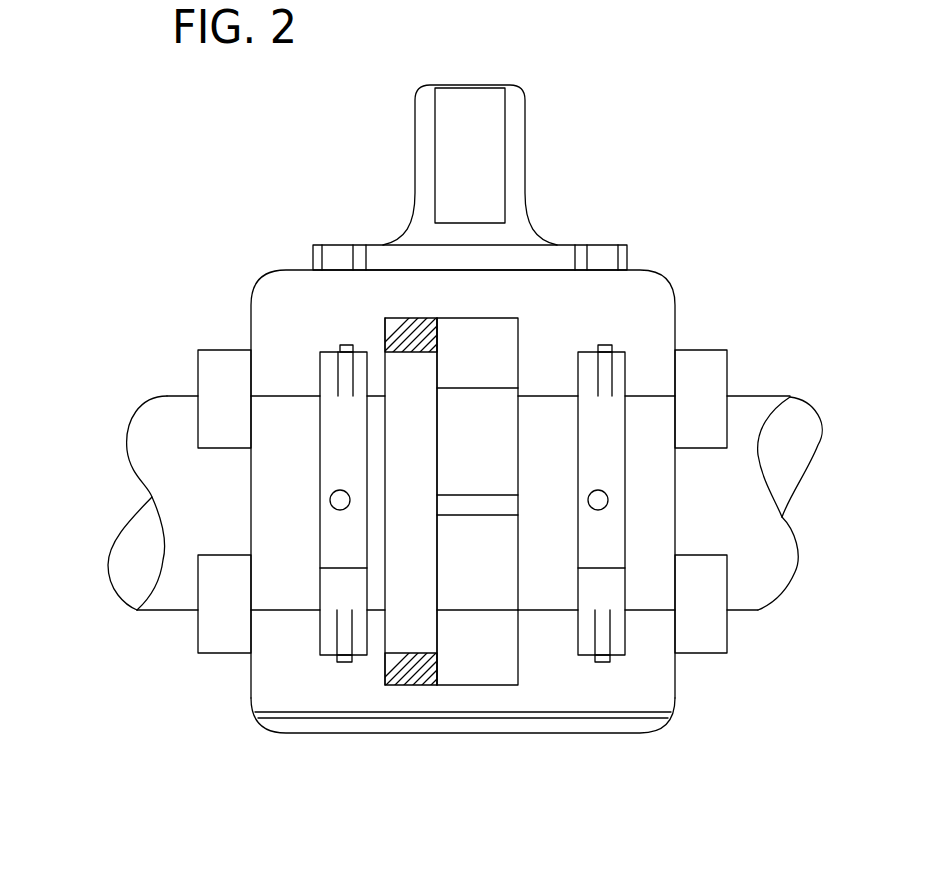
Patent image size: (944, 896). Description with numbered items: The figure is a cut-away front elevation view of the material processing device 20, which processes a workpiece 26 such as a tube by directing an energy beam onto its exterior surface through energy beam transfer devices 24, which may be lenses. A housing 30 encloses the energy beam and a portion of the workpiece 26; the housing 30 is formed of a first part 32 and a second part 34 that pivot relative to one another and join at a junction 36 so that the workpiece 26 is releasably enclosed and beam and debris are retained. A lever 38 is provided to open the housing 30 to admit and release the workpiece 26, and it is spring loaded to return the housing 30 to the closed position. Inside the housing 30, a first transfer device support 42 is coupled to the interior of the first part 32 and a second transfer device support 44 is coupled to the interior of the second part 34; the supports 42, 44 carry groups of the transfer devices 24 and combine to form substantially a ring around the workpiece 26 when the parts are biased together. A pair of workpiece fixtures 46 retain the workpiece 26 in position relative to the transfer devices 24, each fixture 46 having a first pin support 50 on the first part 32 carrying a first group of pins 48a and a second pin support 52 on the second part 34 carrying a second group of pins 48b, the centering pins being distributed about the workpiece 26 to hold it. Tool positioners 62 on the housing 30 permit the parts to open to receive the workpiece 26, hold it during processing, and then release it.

The material processing device 20 is at (639, 154).
The energy beam transfer device 24 is at (498, 307).
The workpiece 26 is at (753, 407).
The housing 30 is at (662, 282).
The first part 32 is at (658, 693).
The second part 34 is at (627, 727).
The junction 36 is at (633, 717).
The lever 38 is at (488, 128).
The first transfer device support 42 is at (393, 318).
The second transfer device support 44 is at (410, 687).
The workpiece fixture 46 is at (340, 344).
The first group of pins 48a is at (307, 349).
The second group of pins 48b is at (342, 662).
The first pin support 50 is at (335, 537).
The second pin support 52 is at (335, 588).
The tool positioner 62 is at (210, 375).